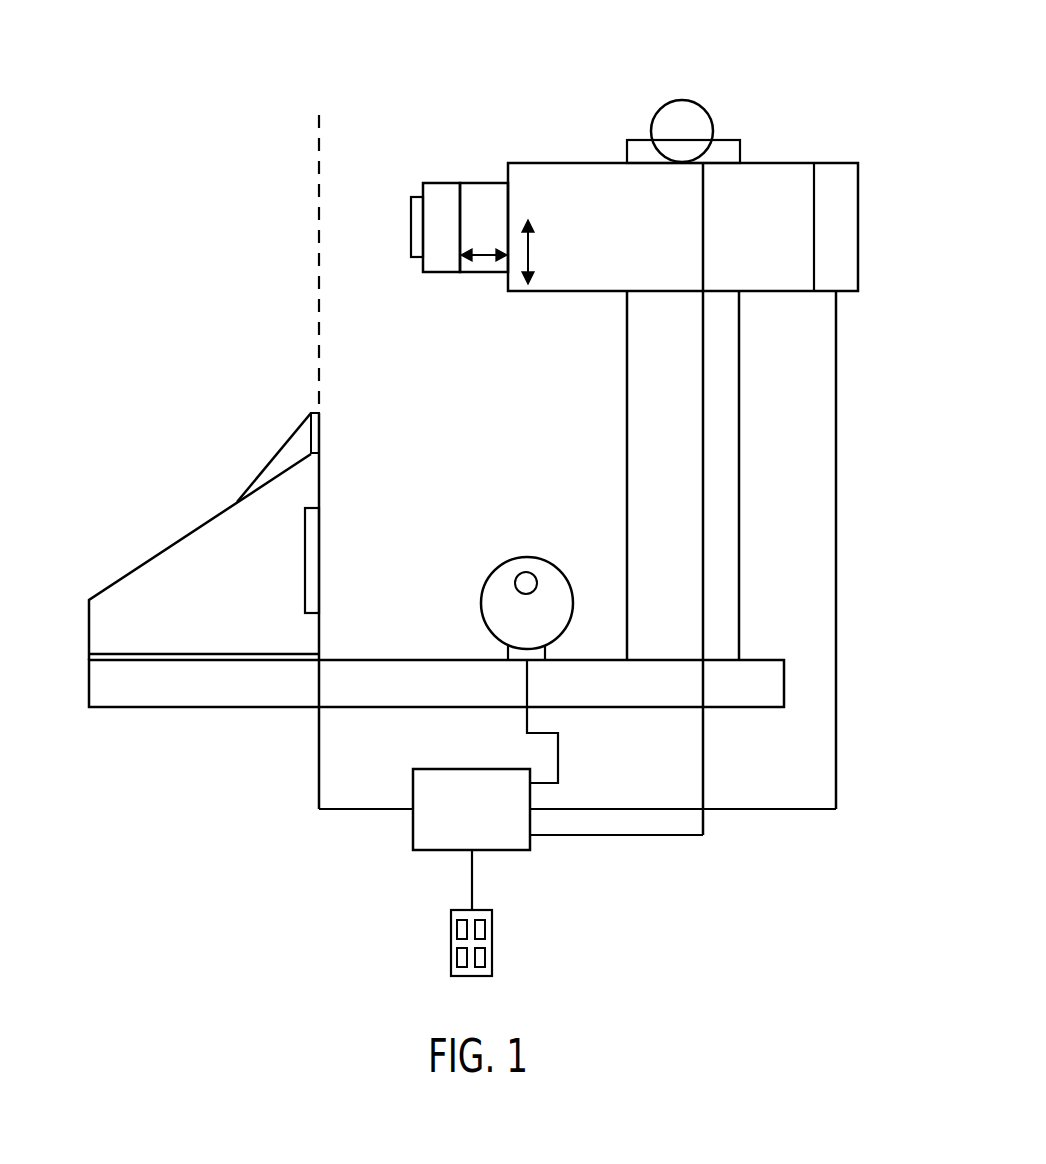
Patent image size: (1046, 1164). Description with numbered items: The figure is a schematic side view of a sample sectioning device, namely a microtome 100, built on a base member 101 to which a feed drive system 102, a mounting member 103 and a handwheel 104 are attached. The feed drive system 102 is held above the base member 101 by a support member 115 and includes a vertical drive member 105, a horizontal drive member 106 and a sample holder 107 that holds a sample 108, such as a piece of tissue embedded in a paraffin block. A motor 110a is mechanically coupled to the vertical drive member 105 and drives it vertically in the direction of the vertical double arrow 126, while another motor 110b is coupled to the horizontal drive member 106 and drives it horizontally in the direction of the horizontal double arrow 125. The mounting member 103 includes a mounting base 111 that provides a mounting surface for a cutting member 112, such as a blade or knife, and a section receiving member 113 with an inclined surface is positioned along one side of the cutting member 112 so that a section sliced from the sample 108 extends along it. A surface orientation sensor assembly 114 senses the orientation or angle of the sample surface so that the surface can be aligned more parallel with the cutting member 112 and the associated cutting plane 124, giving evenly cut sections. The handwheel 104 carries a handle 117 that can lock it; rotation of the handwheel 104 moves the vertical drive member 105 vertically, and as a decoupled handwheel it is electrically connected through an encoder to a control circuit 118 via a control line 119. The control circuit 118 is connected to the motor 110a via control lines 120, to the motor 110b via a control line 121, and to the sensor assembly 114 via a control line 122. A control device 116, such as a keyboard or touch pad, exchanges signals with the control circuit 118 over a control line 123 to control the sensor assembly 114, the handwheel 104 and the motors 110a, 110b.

The microtome 100 is at (771, 58).
The base member 101 is at (784, 680).
The feed drive system 102 is at (534, 110).
The mounting member 103 is at (121, 518).
The handwheel 104 is at (552, 598).
The vertical drive member 105 is at (582, 180).
The horizontal drive member 106 is at (483, 202).
The sample holder 107 is at (440, 205).
The sample 108 is at (417, 222).
The motor 110a is at (707, 112).
The motor 110b is at (830, 197).
The mounting base 111 is at (108, 623).
The cutting member 112 is at (319, 415).
The section receiving member 113 is at (283, 450).
The surface orientation sensor assembly 114 is at (331, 549).
The support member 115 is at (741, 387).
The control device 116 is at (492, 940).
The handle 117 is at (526, 572).
The control circuit 118 is at (432, 842).
The control line 119 is at (558, 750).
The control lines 120 is at (657, 835).
The control line 121 is at (614, 809).
The control line 122 is at (319, 760).
The control line 123 is at (472, 880).
The cutting plane 124 is at (319, 160).
The horizontal double arrow 125 is at (483, 272).
The vertical double arrow 126 is at (532, 253).